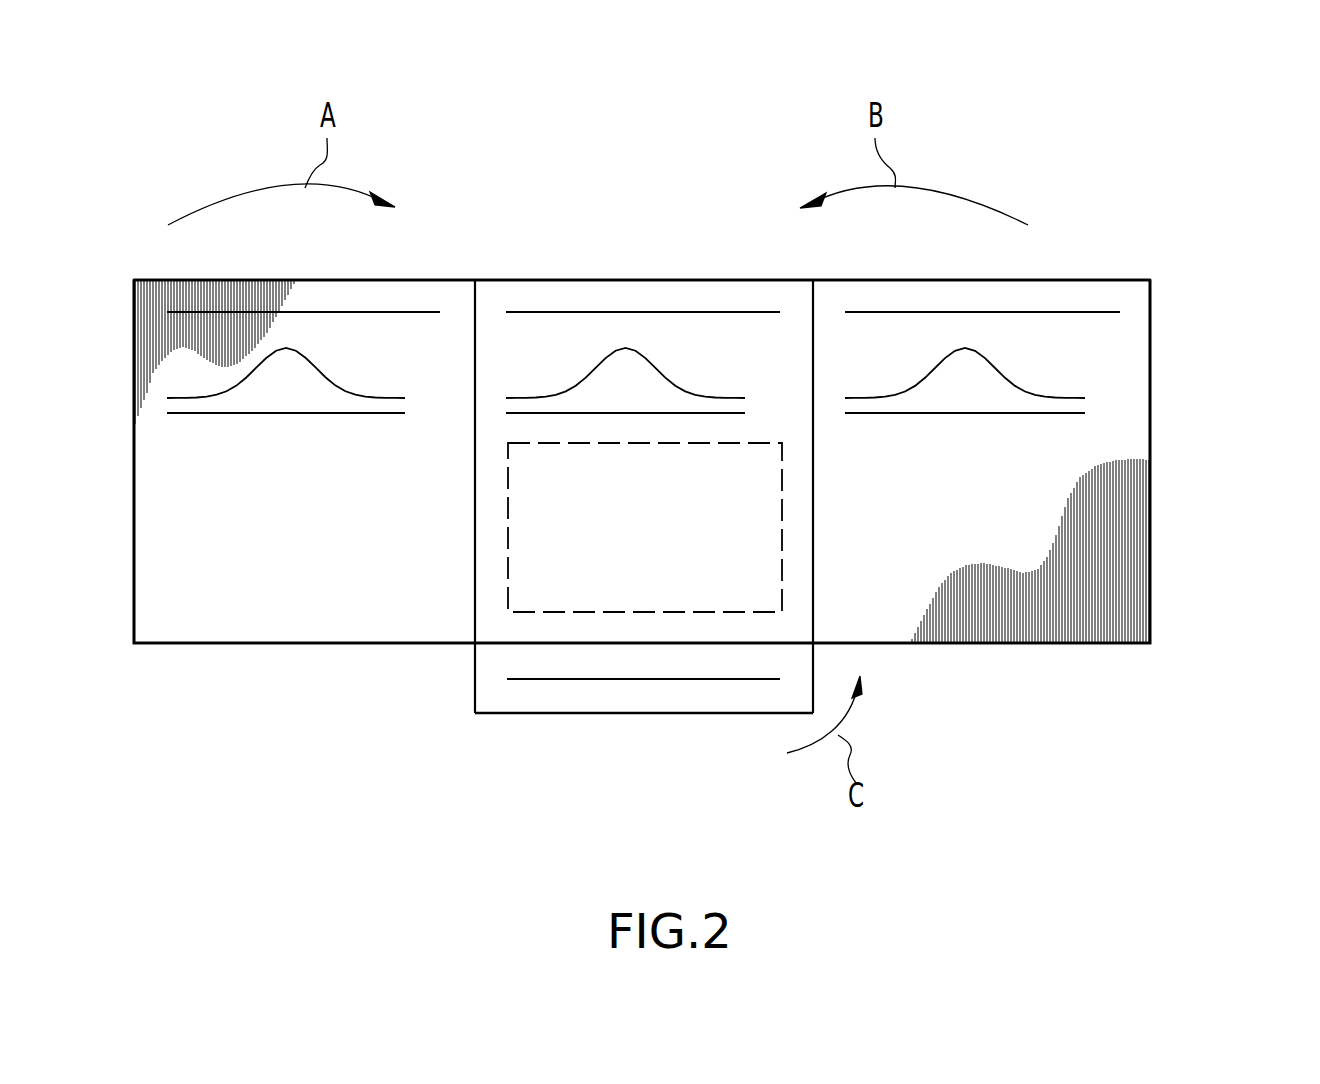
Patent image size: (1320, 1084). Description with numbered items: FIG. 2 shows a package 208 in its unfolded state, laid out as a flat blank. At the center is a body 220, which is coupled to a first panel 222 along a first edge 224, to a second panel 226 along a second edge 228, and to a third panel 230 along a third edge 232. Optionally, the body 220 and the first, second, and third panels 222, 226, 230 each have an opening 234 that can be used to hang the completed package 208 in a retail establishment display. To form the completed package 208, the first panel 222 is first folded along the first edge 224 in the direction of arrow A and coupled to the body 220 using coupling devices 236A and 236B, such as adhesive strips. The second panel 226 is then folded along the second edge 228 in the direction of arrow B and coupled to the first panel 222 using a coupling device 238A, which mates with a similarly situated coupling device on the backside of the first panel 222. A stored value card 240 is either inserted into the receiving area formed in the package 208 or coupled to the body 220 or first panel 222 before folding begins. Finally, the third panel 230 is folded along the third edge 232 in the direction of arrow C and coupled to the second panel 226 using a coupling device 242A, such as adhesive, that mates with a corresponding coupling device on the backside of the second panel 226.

The package 208 is at (1207, 136).
The body 220 is at (495, 294).
The first panel 222 is at (203, 628).
The first edge 224 is at (475, 478).
The second panel 226 is at (1088, 625).
The second edge 228 is at (813, 510).
The third panel 230 is at (495, 670).
The third edge 232 is at (510, 527).
The opening 234 is at (1015, 368).
The coupling device 236A is at (183, 308).
The coupling device 236B is at (645, 312).
The coupling device 238A is at (1100, 312).
The stored value card 240 is at (542, 561).
The coupling device 242A is at (573, 679).